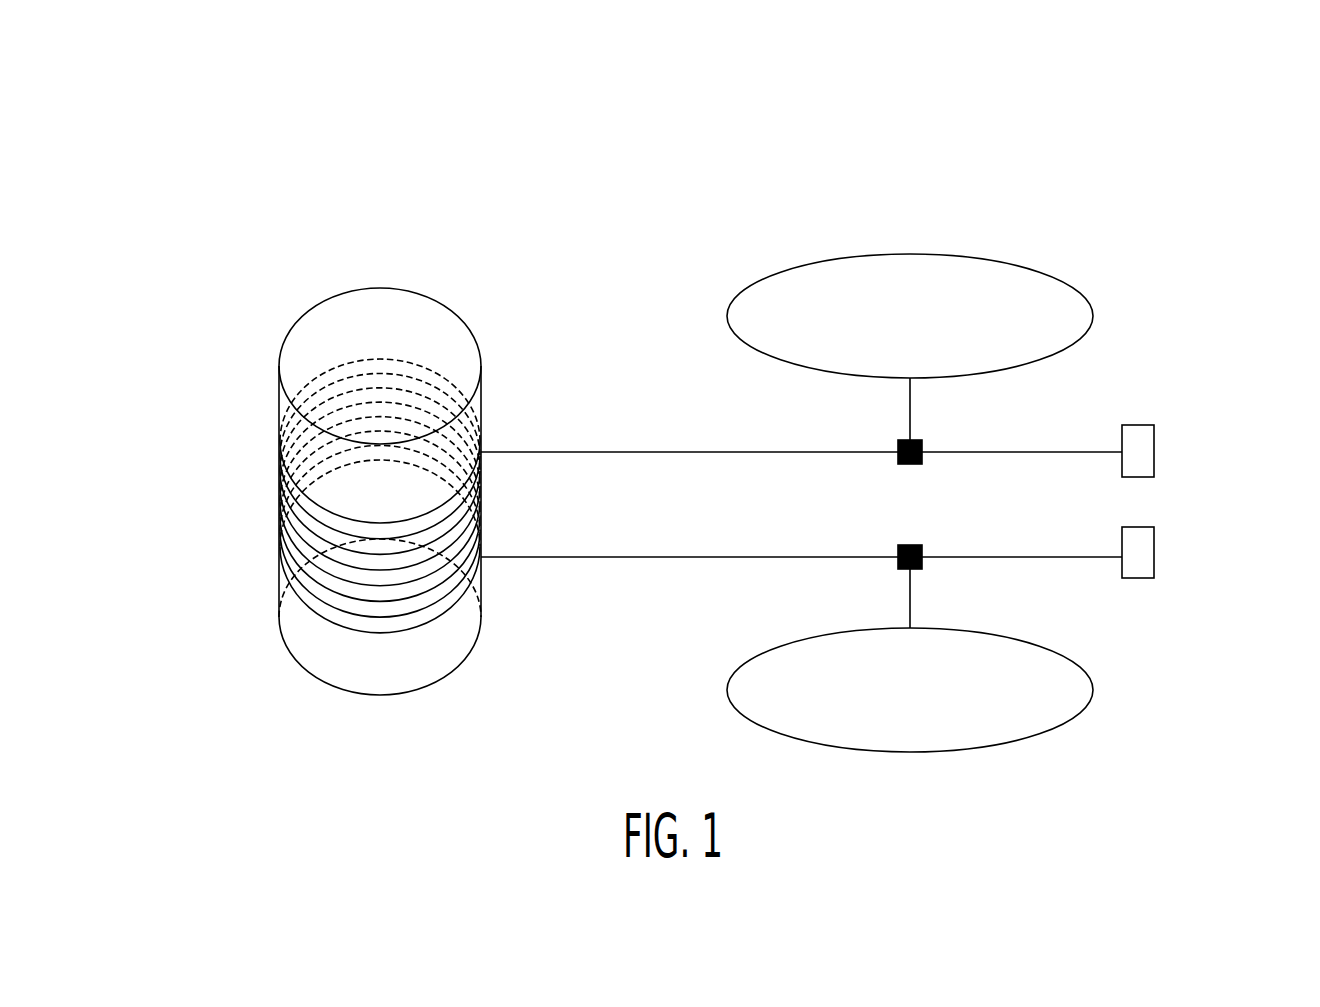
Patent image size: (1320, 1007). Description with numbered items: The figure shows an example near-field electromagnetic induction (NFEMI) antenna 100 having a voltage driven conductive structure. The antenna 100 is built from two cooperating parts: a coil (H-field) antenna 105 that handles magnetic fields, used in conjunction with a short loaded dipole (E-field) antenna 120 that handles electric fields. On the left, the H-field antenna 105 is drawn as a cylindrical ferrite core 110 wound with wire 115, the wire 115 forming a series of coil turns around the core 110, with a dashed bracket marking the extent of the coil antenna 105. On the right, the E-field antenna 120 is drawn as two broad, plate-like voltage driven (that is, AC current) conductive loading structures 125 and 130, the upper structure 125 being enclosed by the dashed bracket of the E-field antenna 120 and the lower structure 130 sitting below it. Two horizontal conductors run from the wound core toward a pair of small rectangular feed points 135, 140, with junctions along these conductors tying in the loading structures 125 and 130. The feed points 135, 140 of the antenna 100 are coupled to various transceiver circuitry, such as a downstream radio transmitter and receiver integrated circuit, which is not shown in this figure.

The near-field electromagnetic induction (NFEMI) antenna 100 is at (120, 121).
The coil (H-field) antenna 105 is at (512, 305).
The ferrite core 110 is at (401, 310).
The wire 115 is at (318, 621).
The short loaded dipole (E-field) antenna 120 is at (1102, 307).
The conductive loading structure 125 is at (956, 256).
The conductive loading structure 130 is at (1093, 693).
The feed point 135 is at (1156, 436).
The feed point 140 is at (1156, 550).